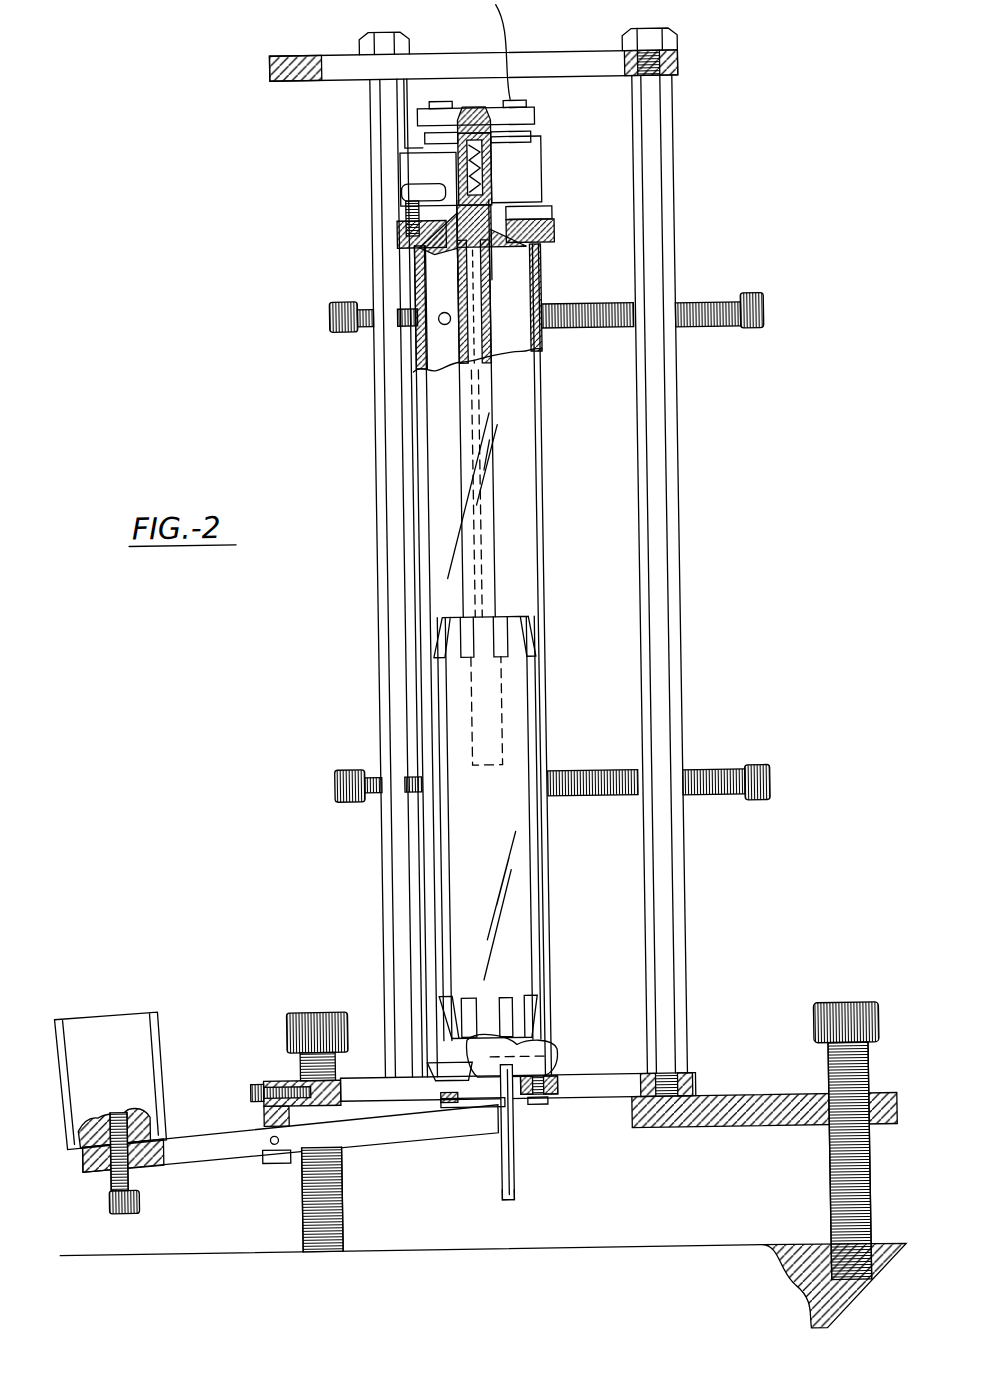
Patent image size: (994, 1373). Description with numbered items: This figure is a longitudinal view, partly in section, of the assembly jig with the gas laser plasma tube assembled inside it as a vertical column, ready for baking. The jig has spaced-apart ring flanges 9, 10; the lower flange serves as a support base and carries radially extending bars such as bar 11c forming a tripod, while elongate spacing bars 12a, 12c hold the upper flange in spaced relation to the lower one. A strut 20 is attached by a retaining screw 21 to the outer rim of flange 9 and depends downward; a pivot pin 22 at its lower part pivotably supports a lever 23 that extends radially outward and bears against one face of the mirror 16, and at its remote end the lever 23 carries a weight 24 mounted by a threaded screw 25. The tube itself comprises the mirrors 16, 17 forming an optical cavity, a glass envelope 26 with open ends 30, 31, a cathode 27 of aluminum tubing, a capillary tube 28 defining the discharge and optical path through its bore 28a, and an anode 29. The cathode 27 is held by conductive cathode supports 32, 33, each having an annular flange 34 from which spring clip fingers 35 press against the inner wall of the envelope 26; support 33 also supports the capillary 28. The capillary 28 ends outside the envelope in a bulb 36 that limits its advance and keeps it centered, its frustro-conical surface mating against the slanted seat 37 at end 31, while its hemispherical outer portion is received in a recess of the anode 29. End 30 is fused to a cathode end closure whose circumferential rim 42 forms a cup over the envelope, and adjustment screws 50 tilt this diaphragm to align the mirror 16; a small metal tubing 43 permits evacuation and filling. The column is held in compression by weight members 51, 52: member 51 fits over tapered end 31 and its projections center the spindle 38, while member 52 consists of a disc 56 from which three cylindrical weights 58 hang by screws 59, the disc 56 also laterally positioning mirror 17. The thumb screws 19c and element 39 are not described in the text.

The ring flange 9 is at (690, 1080).
The ring flange 10 is at (688, 58).
The radially extending bar 11c is at (740, 1099).
The elongate spacing bar 12a is at (378, 503).
The elongate spacing bar 12c is at (682, 575).
The mirror 16 is at (493, 1140).
The mirror 17 is at (480, 106).
The thumb screw 19c is at (757, 297).
The strut 20 is at (293, 1060).
The retaining screw 21 is at (250, 1085).
The pivot pin 22 is at (266, 1141).
The lever 23 is at (220, 1125).
The weight 24 is at (510, 617).
The threaded screw 25 is at (102, 1200).
The glass envelope 26 is at (546, 530).
The cathode 27 is at (535, 710).
The capillary tube 28 is at (464, 388).
The bore 28a is at (475, 407).
The anode 29 is at (445, 230).
The open end 30 is at (548, 1095).
The open end 31 is at (552, 214).
The cathode support 32 is at (510, 1045).
The cathode support 33 is at (520, 617).
The annular flange 34 is at (520, 1062).
The spring clip fingers 35 is at (462, 650).
The bulb 36 is at (455, 240).
The seat 37 is at (535, 248).
The spindle 38 is at (440, 197).
The spring 39 is at (500, 150).
The circumferential rim 42 is at (435, 1110).
The metal tubing 43 is at (505, 1190).
The adjustment screw 50 is at (520, 1105).
The weight member 51 is at (548, 127).
The weighting member 52 is at (568, 234).
The disc 56 is at (425, 116).
The cylindrical weights 58 is at (548, 168).
The screws 59 is at (432, 137).